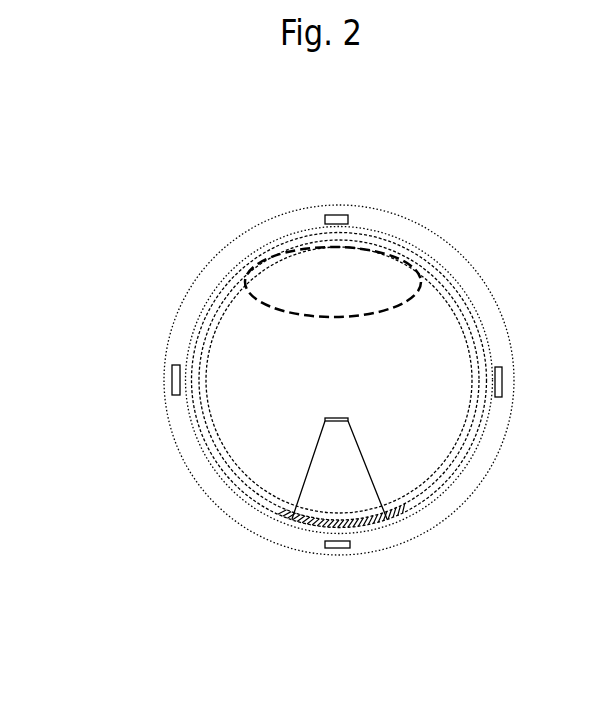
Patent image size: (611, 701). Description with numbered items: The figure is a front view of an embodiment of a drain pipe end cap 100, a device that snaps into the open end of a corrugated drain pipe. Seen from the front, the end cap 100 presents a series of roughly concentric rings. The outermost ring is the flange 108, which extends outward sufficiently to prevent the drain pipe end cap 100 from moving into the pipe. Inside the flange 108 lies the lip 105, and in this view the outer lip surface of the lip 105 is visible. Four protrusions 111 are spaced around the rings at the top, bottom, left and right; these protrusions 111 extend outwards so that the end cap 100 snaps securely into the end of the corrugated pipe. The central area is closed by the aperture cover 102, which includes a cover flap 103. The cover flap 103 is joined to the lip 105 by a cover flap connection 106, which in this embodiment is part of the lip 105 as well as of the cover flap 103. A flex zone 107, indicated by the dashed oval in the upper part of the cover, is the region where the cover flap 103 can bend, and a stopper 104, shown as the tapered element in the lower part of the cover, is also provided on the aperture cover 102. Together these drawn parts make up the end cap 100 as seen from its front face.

The drain pipe end cap 100 is at (153, 245).
The aperture cover 102 is at (262, 250).
The cover flap 103 is at (268, 458).
The stopper 104 is at (315, 490).
The lip 105 is at (430, 493).
The cover flap connection 106 is at (355, 236).
The flex zone 107 is at (348, 283).
The flange 108 is at (447, 257).
The protrusion 111 is at (336, 214).